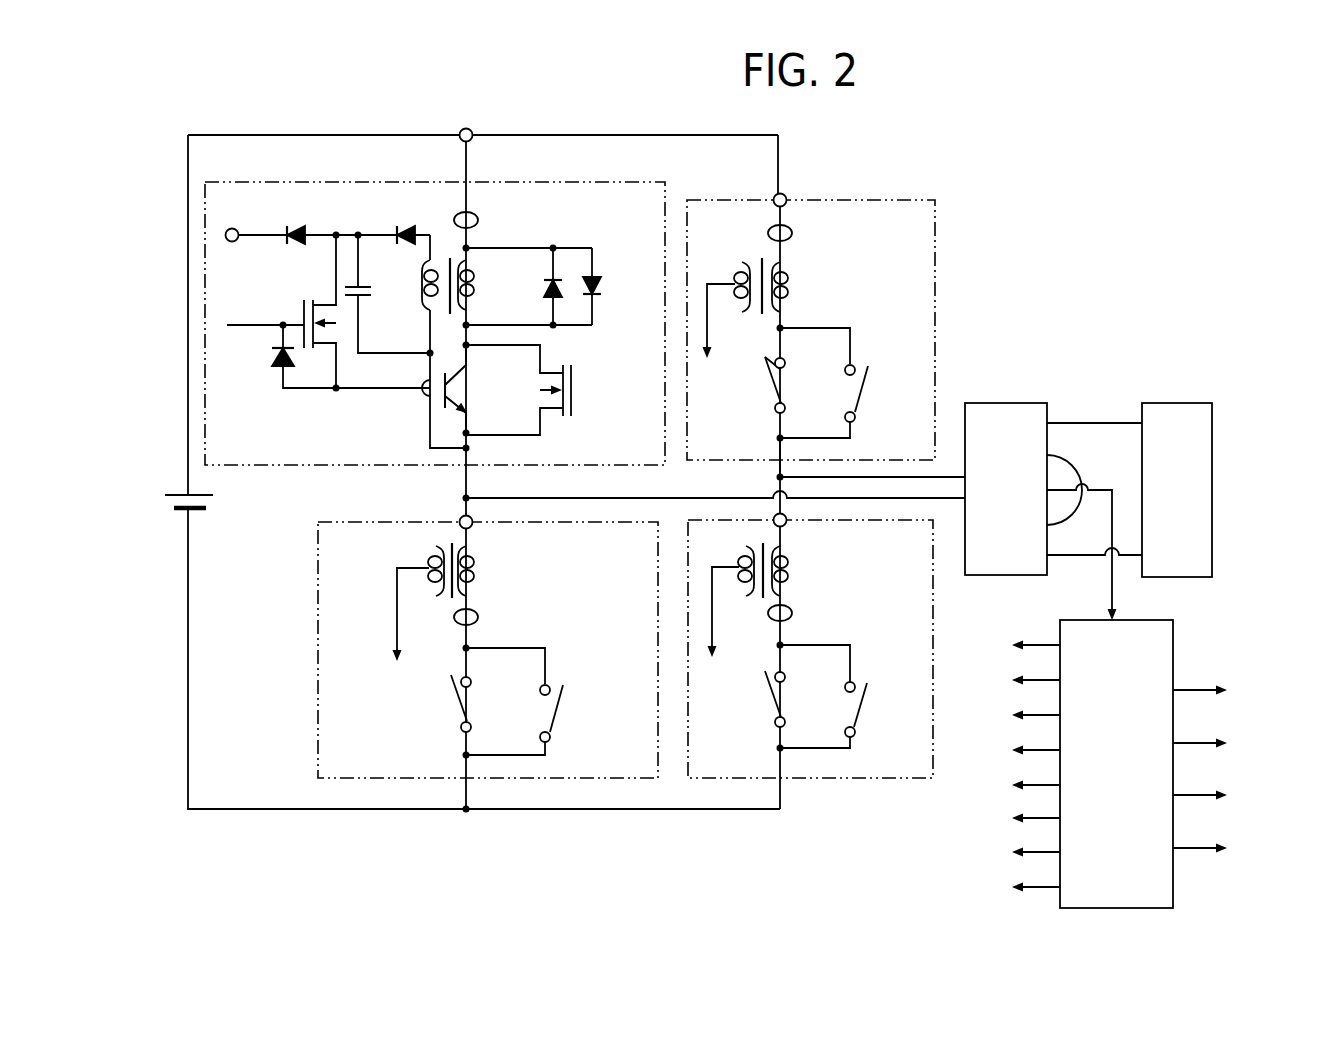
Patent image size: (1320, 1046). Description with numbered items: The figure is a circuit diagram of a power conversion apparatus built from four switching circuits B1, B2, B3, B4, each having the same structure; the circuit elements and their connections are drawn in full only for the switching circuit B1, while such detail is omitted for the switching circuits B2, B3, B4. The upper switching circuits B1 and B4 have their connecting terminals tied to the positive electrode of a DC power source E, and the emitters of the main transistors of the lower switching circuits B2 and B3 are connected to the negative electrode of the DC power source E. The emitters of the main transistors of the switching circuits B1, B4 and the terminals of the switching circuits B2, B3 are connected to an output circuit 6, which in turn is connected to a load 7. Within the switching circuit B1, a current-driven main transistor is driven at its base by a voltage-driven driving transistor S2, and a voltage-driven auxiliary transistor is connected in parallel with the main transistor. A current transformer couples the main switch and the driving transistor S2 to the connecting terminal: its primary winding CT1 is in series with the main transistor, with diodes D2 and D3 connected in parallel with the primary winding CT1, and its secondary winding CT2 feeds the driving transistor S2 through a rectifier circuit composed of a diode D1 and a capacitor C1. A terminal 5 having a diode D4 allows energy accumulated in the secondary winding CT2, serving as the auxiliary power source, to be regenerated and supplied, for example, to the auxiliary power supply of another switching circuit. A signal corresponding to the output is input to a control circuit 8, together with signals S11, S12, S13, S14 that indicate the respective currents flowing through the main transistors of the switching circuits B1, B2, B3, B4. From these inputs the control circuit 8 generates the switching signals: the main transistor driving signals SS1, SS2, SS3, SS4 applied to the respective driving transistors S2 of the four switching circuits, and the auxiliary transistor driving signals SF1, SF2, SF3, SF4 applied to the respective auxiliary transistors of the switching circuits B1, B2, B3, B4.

The terminal 5 is at (233, 242).
The output circuit 6 is at (1017, 413).
The load 7 is at (1192, 413).
The control circuit 8 is at (1150, 660).
The DC power source E is at (203, 495).
The switching circuit B1 is at (314, 470).
The switching circuit B2 is at (310, 655).
The switching circuit B3 is at (830, 786).
The switching circuit B4 is at (942, 278).
The driving transistor S2 is at (302, 304).
The diode D1 is at (406, 226).
The diode D2 is at (540, 290).
The diode D3 is at (600, 285).
The diode D4 is at (300, 227).
The capacitor C1 is at (365, 300).
The primary winding CT1 is at (470, 283).
The secondary winding CT2 is at (424, 295).
The current signal S11 is at (480, 220).
The current signal S12 is at (480, 617).
The current signal S13 is at (794, 613).
The current signal S14 is at (794, 233).
The main transistor driving signal SS1 is at (262, 335).
The main transistor driving signal SS2 is at (435, 682).
The main transistor driving signal SS3 is at (745, 677).
The main transistor driving signal SS4 is at (745, 367).
The auxiliary transistor driving signal SF1 is at (650, 390).
The auxiliary transistor driving signal SF2 is at (628, 707).
The auxiliary transistor driving signal SF3 is at (920, 708).
The auxiliary transistor driving signal SF4 is at (918, 397).